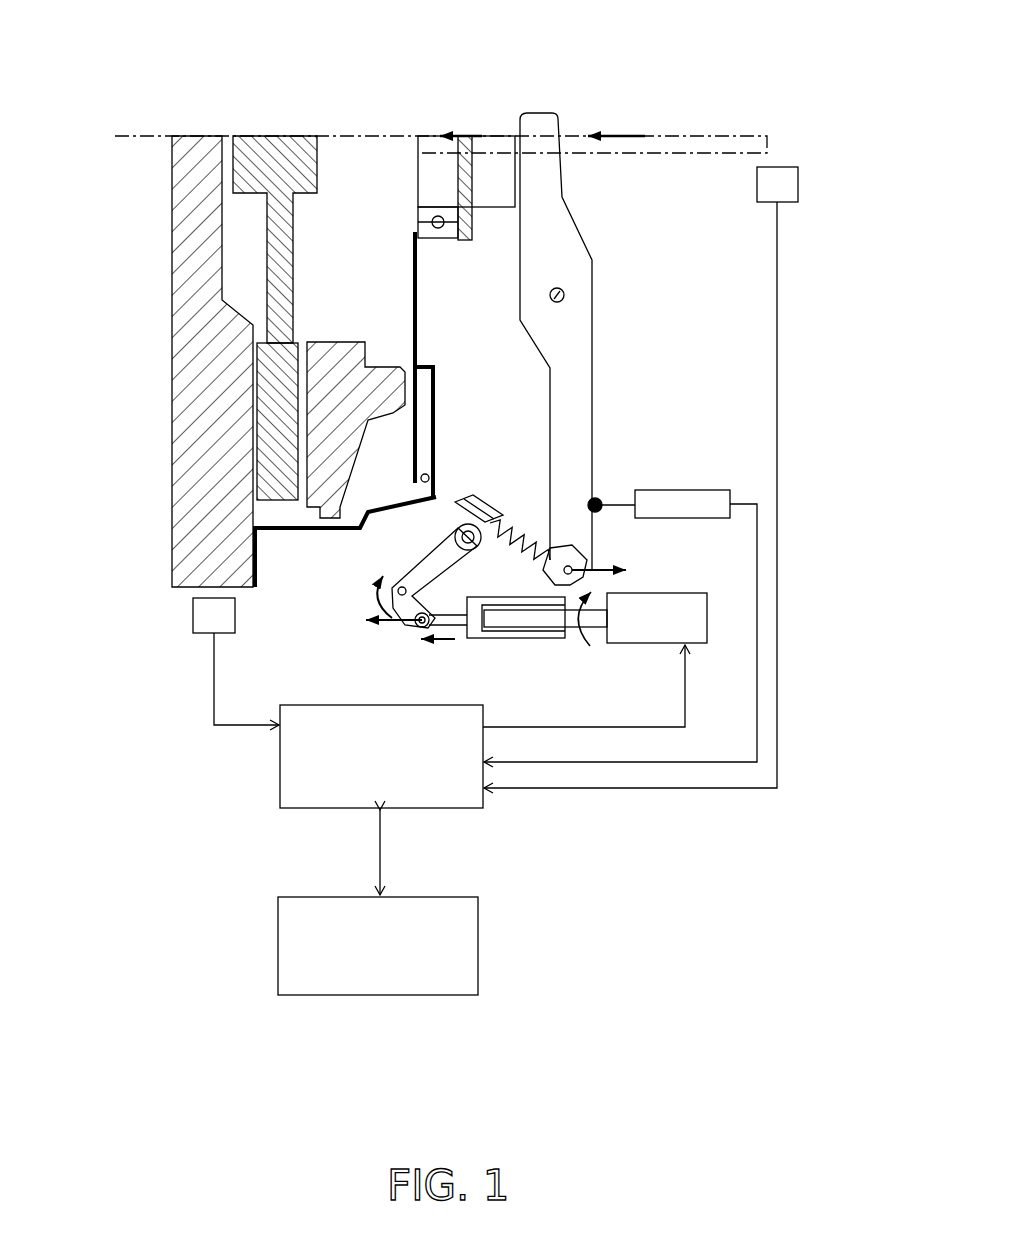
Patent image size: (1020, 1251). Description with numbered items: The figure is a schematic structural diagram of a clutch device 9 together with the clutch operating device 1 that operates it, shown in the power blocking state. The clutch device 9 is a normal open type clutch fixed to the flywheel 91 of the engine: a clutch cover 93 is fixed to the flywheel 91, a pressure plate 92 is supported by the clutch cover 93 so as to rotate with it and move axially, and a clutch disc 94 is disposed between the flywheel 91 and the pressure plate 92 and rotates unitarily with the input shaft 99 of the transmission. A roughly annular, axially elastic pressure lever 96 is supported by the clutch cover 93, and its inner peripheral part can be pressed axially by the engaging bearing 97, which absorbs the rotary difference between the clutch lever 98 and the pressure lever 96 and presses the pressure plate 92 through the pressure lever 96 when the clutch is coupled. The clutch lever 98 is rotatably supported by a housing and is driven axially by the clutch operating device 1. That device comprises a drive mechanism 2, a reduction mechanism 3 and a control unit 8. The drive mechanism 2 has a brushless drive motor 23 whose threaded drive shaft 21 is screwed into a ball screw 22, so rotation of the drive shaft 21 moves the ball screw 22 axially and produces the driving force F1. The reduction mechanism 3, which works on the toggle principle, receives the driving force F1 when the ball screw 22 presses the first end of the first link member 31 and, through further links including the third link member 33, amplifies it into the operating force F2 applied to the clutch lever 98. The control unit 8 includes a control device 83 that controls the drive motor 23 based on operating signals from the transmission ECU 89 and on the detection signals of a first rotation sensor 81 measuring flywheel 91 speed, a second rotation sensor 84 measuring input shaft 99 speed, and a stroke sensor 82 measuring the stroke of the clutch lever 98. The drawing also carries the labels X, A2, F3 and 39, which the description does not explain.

The clutch operating device 1 is at (464, 615).
The drive mechanism 2 is at (587, 626).
The reduction mechanism 3 is at (485, 470).
The control unit 8 is at (464, 615).
The clutch device 9 is at (249, 319).
The drive shaft 21 is at (578, 640).
The ball screw 22 is at (527, 640).
The drive motor 23 is at (698, 642).
The first link member 31 is at (430, 568).
The third link member 33 is at (508, 520).
The slider 39 is at (550, 545).
The first rotation sensor 81 is at (195, 625).
The stroke sensor 82 is at (712, 490).
The control device 83 is at (332, 803).
The second rotation sensor 84 is at (765, 185).
The transmission ECU 89 is at (382, 997).
The flywheel 91 is at (182, 362).
The pressure plate 92 is at (330, 343).
The clutch cover 93 is at (330, 545).
The clutch disc 94 is at (258, 145).
The pressure lever 96 is at (420, 312).
The engaging bearing 97 is at (465, 128).
The clutch lever 98 is at (570, 356).
The input shaft 99 is at (687, 155).
The axis X is at (425, 137).
The pivot axis A2 is at (564, 291).
The driving force F1 is at (392, 628).
The operating force F2 is at (600, 567).
The force F3 is at (503, 128).